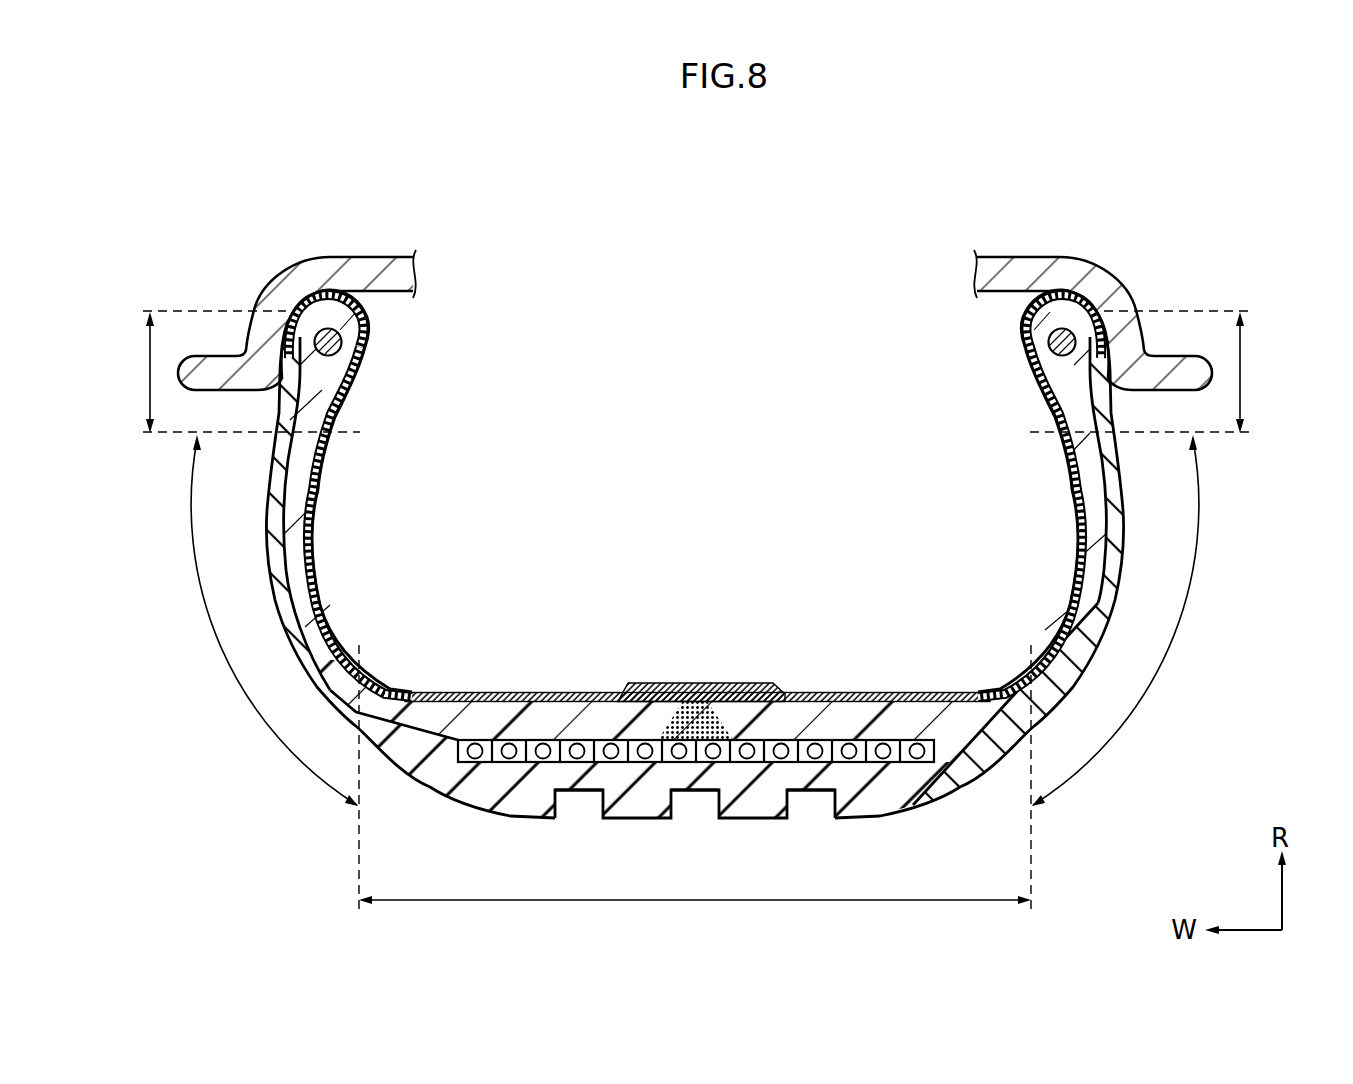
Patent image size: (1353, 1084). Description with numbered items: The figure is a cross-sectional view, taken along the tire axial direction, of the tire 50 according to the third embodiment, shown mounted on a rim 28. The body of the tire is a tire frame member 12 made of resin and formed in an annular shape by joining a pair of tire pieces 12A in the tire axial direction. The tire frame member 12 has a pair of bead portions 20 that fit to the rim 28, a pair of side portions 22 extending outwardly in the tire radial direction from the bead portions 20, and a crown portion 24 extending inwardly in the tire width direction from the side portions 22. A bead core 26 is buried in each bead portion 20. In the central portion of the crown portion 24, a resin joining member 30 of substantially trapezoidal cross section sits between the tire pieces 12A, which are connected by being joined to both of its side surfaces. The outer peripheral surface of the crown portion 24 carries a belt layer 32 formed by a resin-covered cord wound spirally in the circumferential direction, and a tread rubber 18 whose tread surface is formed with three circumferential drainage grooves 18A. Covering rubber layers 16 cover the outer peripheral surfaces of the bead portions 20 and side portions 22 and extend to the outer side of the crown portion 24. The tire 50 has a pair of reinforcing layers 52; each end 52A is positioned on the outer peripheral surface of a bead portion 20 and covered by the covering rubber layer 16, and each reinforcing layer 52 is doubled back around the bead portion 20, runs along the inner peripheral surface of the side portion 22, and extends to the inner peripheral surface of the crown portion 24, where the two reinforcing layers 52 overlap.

The tire frame member 12 is at (808, 610).
The tire pieces 12A is at (612, 710).
The covering rubber layer 16 is at (281, 554).
The tread rubber 18 is at (642, 809).
The groove 18A is at (793, 800).
The bead portion 20 is at (694, 372).
The side portion 22 is at (696, 620).
The crown portion 24 is at (695, 791).
The bead core 26 is at (343, 348).
The rim 28 is at (1112, 281).
The joining member 30 is at (697, 690).
The belt layer 32 is at (905, 757).
The tire 50 is at (1012, 161).
The reinforcing layer 52 is at (365, 662).
The end of reinforcing layer 52A is at (291, 371).